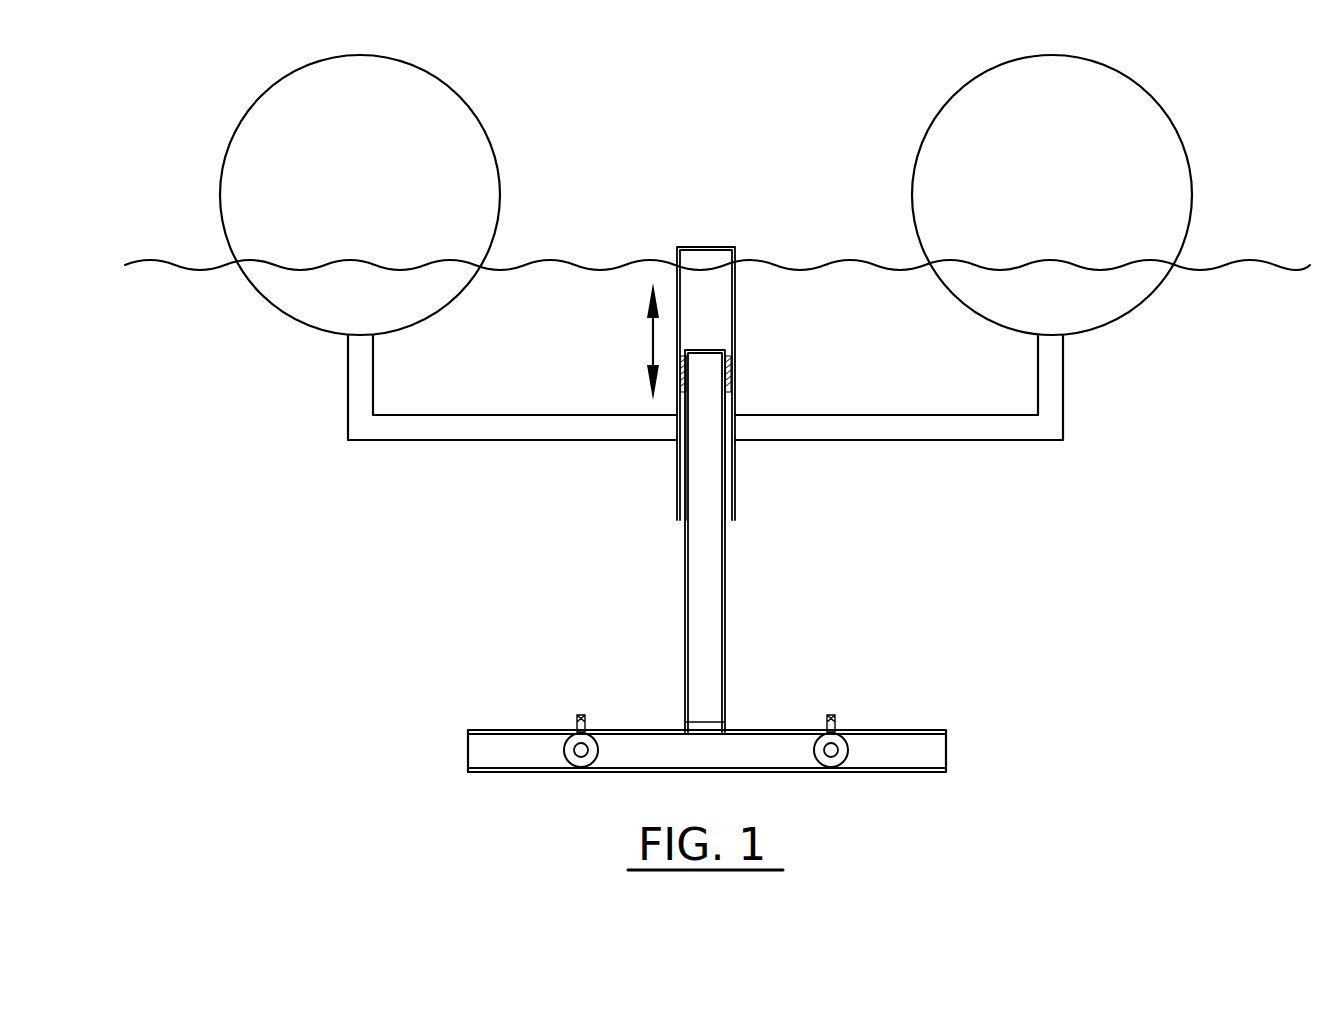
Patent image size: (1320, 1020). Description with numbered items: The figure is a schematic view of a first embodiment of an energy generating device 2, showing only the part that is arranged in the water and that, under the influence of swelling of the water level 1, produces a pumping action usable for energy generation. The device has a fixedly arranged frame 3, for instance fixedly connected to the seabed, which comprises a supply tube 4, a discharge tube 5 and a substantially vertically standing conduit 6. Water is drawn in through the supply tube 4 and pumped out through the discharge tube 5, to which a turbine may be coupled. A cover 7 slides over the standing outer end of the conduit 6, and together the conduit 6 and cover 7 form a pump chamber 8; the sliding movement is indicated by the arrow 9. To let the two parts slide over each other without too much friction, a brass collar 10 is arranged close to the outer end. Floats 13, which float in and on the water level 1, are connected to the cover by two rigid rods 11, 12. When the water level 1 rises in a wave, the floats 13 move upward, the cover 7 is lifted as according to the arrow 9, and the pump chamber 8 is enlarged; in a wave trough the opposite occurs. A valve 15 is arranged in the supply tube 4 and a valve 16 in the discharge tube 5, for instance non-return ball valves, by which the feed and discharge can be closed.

The water level 1 is at (141, 234).
The energy generating device 2 is at (757, 137).
The frame 3 is at (659, 627).
The supply tube 4 is at (490, 729).
The discharge tube 5 is at (922, 729).
The conduit 6 is at (727, 566).
The cover 7 is at (734, 322).
The pump chamber 8 is at (764, 262).
The arrow 9 is at (652, 335).
The brass collar 10 is at (730, 370).
The rigid rod 11 is at (503, 430).
The rigid rod 12 is at (885, 427).
The float 13 is at (483, 177).
The valve 15 is at (568, 696).
The valve 16 is at (853, 692).